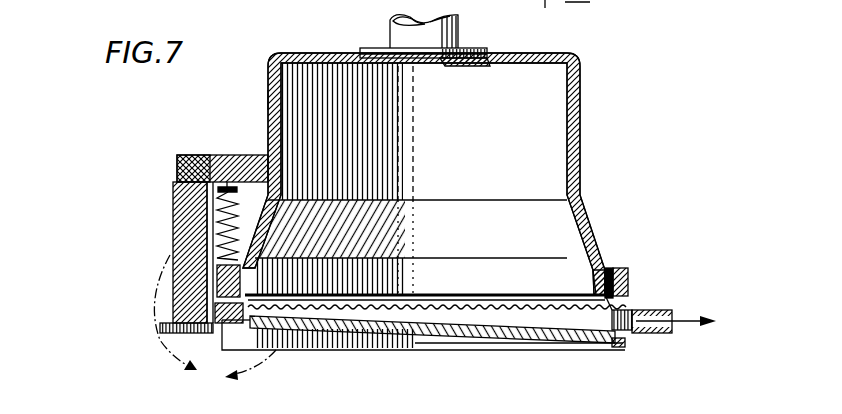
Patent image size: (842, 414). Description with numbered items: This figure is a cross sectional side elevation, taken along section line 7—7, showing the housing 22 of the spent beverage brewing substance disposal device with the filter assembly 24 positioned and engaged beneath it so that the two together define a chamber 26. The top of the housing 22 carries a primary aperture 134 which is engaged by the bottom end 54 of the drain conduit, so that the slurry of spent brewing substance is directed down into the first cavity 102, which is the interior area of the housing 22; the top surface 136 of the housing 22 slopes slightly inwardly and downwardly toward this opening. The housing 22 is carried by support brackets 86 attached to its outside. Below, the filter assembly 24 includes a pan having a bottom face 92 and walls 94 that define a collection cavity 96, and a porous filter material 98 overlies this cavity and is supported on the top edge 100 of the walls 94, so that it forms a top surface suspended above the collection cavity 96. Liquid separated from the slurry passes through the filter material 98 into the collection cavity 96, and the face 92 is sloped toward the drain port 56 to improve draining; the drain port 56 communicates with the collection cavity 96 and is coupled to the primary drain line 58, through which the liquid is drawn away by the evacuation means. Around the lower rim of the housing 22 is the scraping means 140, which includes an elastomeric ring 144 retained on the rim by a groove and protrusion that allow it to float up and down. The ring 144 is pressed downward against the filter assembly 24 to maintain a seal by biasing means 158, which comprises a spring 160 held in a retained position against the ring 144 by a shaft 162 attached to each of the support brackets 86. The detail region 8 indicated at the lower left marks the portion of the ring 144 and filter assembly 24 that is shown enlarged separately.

The section line 7— 7 is at (567, 12).
The detail view region 8 is at (215, 321).
The housing 22 is at (262, 96).
The filter assembly 24 is at (630, 352).
The chamber 26 is at (548, 170).
The bottom end of the drain conduit 54 is at (380, 50).
The drain port 56 is at (660, 335).
The primary drain line 58 is at (462, 14).
The support brackets 86 is at (237, 155).
The face of the pan 92 is at (465, 330).
The walls of the pan 94 is at (577, 318).
The collection cavity 96 is at (558, 318).
The porous filter material 98 is at (510, 305).
The top edge of the walls 100 is at (632, 312).
The first cavity 102 is at (446, 142).
The primary aperture 134 is at (478, 66).
The top surface of the housing 136 is at (318, 58).
The scraping means 140 is at (205, 275).
The ring 144 is at (628, 280).
The biasing means 158 is at (220, 222).
The spring 160 is at (218, 257).
The shaft 162 is at (208, 157).